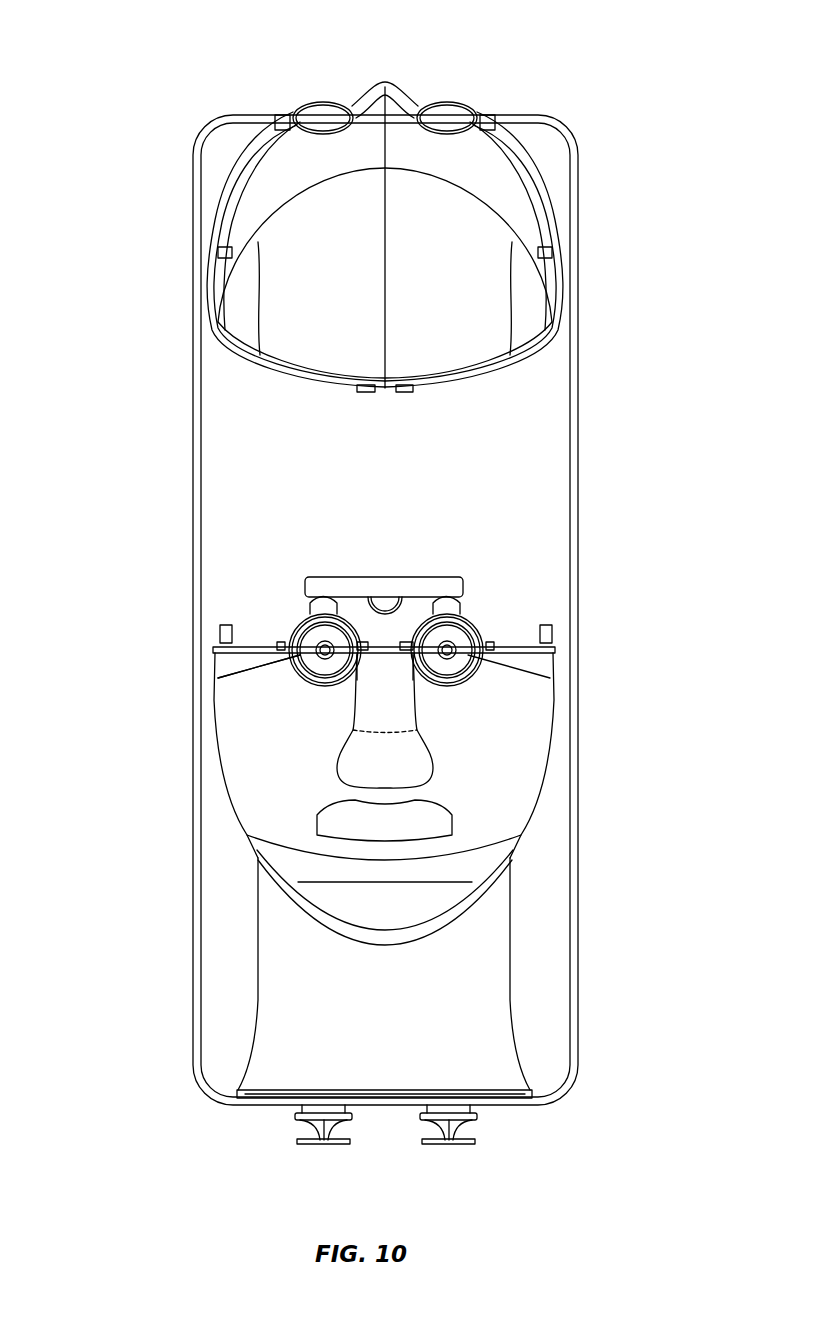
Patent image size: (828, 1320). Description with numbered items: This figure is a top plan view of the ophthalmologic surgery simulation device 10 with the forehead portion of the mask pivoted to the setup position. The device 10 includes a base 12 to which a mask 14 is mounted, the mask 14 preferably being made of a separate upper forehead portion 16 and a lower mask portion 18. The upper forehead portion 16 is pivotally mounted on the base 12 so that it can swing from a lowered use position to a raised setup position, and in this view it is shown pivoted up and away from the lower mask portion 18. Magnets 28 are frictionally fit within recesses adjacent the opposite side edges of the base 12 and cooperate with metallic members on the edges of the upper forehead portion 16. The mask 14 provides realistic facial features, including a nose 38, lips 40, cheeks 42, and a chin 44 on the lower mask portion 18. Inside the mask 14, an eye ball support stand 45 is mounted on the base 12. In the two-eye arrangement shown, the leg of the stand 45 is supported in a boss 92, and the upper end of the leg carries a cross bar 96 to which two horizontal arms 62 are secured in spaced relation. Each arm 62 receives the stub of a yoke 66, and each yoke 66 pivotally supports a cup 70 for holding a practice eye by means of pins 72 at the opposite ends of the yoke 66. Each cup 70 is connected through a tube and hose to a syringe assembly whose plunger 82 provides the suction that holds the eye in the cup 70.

The ophthalmologic surgery simulation device 10 is at (160, 42).
The base 12 is at (215, 468).
The mask 14 is at (565, 273).
The upper forehead portion 16 is at (557, 322).
The lower mask portion 18 is at (548, 800).
The magnets 28 is at (218, 633).
The nose 38 is at (422, 752).
The lips 40 is at (448, 828).
The cheeks 42 is at (290, 738).
The chin 44 is at (388, 945).
The eye ball support stand 45 is at (486, 542).
The horizontal arm 62 is at (300, 605).
The yoke 66 is at (292, 628).
The cup 70 is at (414, 638).
The pins 72 is at (415, 655).
The plunger 82 is at (302, 1145).
The boss 92 is at (383, 575).
The cross bar 96 is at (432, 583).